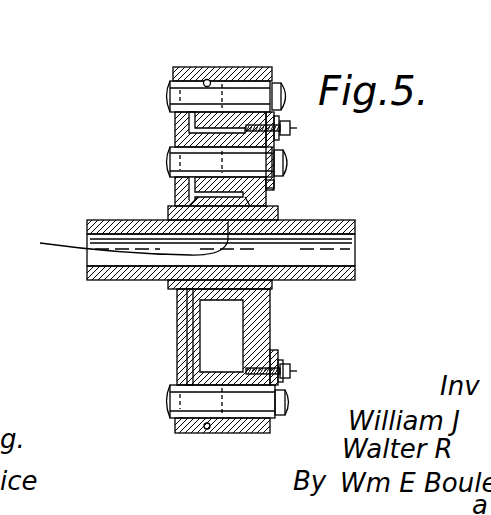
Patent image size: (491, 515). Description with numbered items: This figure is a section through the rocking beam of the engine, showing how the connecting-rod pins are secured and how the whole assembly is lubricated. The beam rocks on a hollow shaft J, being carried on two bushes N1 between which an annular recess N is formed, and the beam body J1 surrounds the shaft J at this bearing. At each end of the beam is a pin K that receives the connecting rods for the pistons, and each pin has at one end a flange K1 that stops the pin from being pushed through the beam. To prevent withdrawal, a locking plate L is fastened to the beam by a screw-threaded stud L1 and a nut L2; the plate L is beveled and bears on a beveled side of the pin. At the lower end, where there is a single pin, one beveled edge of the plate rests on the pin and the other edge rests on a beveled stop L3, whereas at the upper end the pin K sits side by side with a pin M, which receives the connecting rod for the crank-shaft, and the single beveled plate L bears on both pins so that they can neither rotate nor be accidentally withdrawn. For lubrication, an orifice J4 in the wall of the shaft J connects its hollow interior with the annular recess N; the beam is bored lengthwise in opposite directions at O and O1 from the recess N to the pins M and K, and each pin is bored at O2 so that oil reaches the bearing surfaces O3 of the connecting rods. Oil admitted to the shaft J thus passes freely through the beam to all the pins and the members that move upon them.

The shaft J is at (357, 232).
The lower bracket body J1 is at (272, 318).
The orifice J4 is at (114, 244).
The pin K is at (232, 95).
The flange K1 is at (278, 85).
The locking plate L is at (276, 140).
The screw-threaded stud L1 is at (293, 368).
The nut L2 is at (287, 376).
The beveled stop L3 is at (278, 345).
The pin M is at (190, 160).
The annular recess N is at (278, 198).
The bushes N1 is at (172, 287).
The lengthwise bore O is at (190, 136).
The lengthwise bore O1 is at (188, 336).
The pin bore O2 is at (172, 70).
The bearing surfaces O3 is at (207, 79).